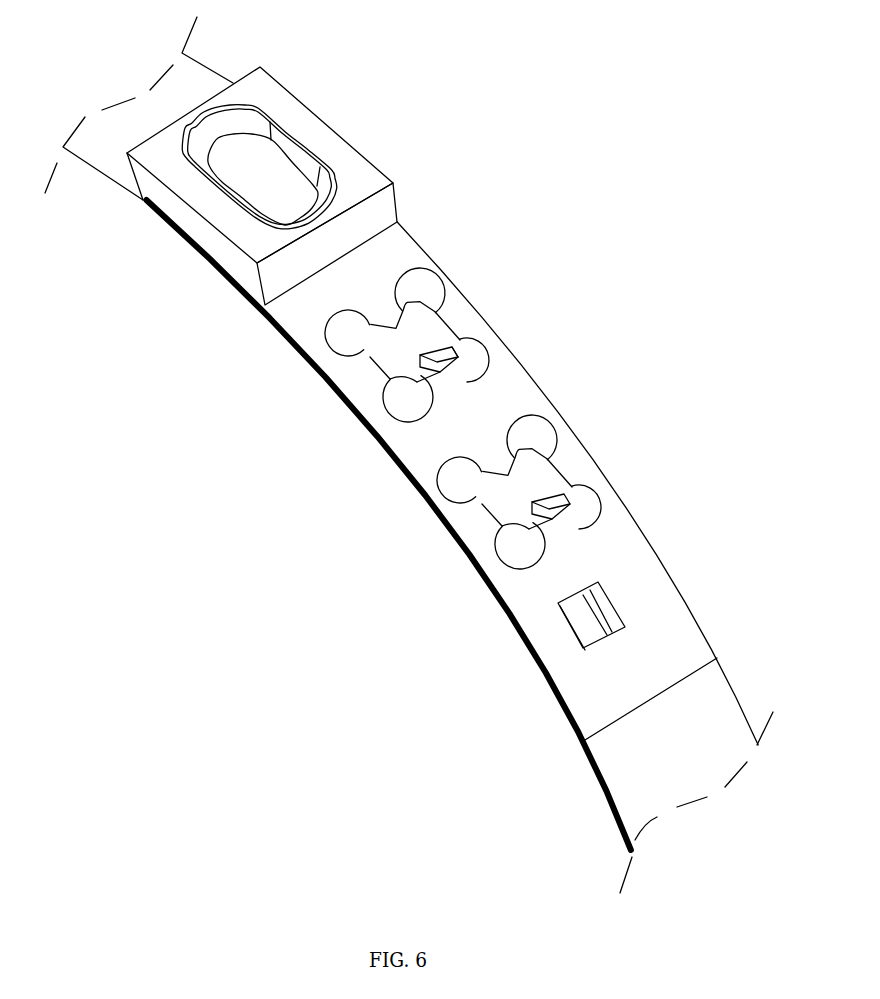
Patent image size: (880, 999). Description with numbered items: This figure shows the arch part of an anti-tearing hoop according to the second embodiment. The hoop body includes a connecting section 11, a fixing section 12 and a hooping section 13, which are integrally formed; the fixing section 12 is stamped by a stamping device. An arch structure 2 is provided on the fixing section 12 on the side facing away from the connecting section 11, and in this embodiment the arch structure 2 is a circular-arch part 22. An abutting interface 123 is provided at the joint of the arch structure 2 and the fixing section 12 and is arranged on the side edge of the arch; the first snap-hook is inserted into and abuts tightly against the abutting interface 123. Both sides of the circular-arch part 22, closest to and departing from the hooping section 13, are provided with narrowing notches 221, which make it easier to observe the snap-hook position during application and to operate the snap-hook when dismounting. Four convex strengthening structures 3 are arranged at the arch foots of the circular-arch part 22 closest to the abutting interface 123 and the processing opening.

The arch structure 2 is at (494, 314).
The convex strengthening structure 3 is at (592, 501).
The connecting section 11 is at (603, 783).
The fixing section 12 is at (658, 573).
The hooping section 13 is at (322, 136).
The circular-arch part 22 is at (427, 340).
The abutting interface 123 is at (512, 374).
The narrowing notch 221 is at (450, 353).